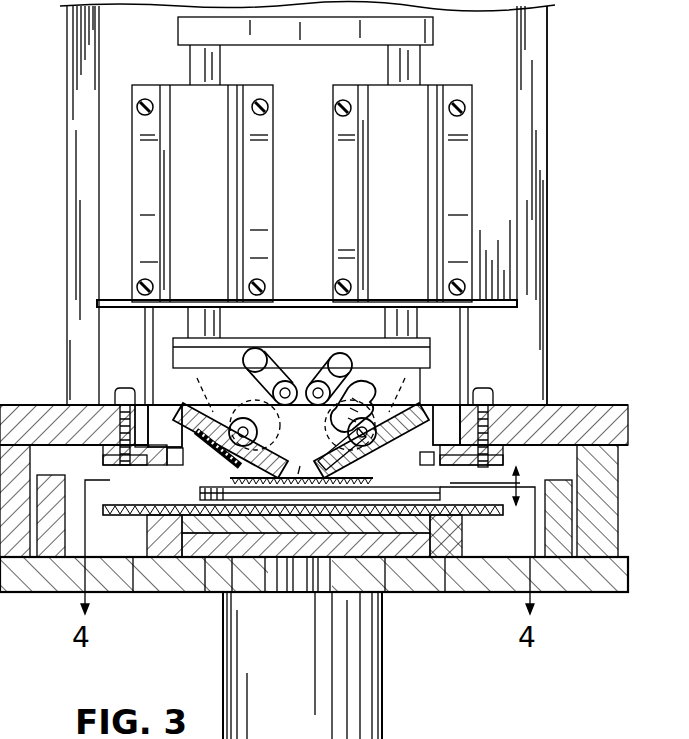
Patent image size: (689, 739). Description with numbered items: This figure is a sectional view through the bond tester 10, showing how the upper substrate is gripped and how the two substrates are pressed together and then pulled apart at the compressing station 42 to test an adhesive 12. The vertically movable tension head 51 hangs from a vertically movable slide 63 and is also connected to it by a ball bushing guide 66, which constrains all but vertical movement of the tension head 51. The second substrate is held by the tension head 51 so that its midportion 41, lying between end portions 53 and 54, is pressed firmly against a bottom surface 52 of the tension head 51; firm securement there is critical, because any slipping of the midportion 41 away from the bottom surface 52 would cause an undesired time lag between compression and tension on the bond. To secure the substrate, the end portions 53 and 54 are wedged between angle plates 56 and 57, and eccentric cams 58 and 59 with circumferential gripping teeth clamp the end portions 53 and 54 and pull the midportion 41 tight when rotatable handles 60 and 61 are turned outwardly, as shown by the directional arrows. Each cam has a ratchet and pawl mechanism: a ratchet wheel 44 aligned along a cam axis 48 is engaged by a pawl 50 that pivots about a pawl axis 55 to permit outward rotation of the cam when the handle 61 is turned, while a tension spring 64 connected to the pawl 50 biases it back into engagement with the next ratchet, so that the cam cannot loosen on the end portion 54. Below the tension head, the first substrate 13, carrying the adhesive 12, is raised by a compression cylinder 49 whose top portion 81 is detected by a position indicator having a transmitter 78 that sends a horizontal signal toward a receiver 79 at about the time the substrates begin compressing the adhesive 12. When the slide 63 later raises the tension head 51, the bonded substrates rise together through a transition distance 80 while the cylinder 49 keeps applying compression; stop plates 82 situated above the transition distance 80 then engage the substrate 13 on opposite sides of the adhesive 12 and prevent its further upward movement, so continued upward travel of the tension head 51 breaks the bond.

The bond tester 10 is at (350, 203).
The slide 63 is at (307, 177).
The ball bushing guide 66 is at (304, 193).
The tension head 51 is at (126, 356).
The eccentric cam 59 is at (463, 356).
The ratchet wheel 44 is at (301, 371).
The compressing station 42 is at (338, 487).
The angle plate 56 is at (84, 418).
The angle plate 57 is at (497, 418).
The end portion 53 is at (200, 416).
The end portion 54 is at (387, 414).
The cam axis 48 is at (335, 502).
The pawl axis 55 is at (271, 360).
The tension spring 64 is at (341, 371).
The eccentric cam 58 is at (277, 364).
The pawl 50 is at (301, 456).
The adhesive 12 is at (308, 460).
The transmitter 78 is at (289, 490).
The first substrate 13 is at (298, 527).
The bottom surface 52 is at (93, 461).
The receiver 79 is at (471, 502).
The transition distance 80 is at (534, 479).
The compression cylinder 49 is at (329, 665).
The stop plates 82 is at (296, 590).
The top portion 81 is at (181, 589).
The rotatable handle 60 is at (226, 545).
The midportion 41 is at (263, 558).
The rotatable handle 61 is at (401, 588).